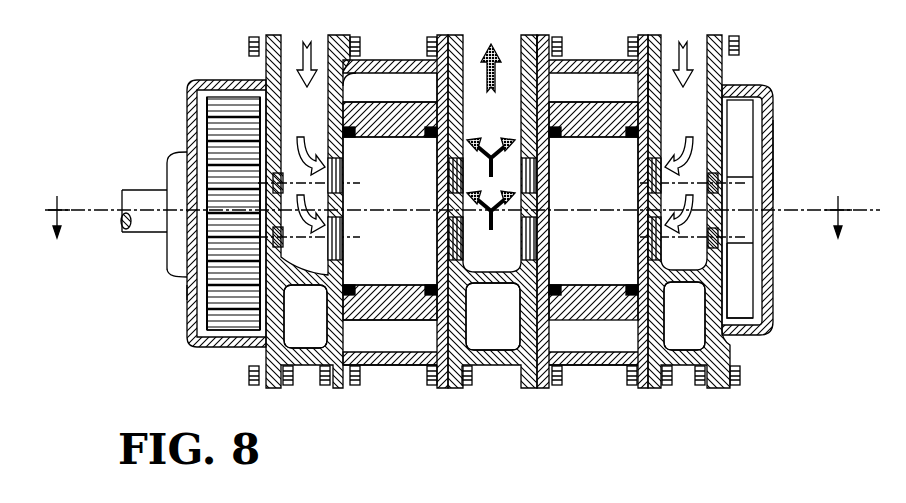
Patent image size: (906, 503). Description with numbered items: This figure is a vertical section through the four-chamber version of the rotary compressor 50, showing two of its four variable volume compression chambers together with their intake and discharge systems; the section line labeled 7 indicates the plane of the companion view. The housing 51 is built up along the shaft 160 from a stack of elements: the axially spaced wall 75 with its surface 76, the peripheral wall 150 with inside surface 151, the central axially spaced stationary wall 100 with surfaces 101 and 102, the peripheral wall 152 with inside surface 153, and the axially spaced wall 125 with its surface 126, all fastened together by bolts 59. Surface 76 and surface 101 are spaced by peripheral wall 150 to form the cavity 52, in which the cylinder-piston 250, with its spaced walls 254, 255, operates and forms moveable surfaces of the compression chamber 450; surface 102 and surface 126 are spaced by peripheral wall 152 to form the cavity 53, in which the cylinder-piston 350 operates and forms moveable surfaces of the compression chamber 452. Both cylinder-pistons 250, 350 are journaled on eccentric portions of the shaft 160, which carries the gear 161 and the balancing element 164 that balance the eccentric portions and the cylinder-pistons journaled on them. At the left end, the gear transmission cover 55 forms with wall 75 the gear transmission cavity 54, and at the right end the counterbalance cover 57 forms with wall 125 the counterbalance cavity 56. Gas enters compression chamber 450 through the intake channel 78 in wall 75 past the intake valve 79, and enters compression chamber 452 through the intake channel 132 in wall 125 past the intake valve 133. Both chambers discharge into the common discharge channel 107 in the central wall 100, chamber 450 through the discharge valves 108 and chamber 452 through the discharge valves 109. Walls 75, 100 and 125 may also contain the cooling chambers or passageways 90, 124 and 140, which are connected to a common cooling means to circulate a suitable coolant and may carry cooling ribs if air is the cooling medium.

The section line 7- 7 is at (448, 207).
The rotary compressor 50 is at (763, 86).
The housing 51 is at (193, 82).
The cavity 52 is at (369, 96).
The cavity 53 is at (571, 96).
The gear transmission cavity 54 is at (205, 305).
The gear transmission cover 55 is at (187, 290).
The counterbalance cavity 56 is at (758, 138).
The counterbalance cover 57 is at (768, 162).
The bolts 59 is at (250, 37).
The axially spaced wall 75 is at (275, 35).
The surface 76 is at (344, 78).
The intake channel 78 is at (298, 119).
The intake valve 79 is at (342, 177).
The cooling chamber or passageway 90 is at (284, 324).
The central axially spaced stationary wall 100 is at (529, 35).
The surface 101 is at (448, 89).
The surface 102 is at (546, 75).
The discharge channel 107 is at (480, 119).
The discharge valves 108 is at (450, 185).
The discharge valves 109 is at (538, 180).
The cooling chambers or passageways 124 is at (465, 315).
The axially spaced wall 125 is at (715, 34).
The surface 126 is at (648, 84).
The intake channel 132 is at (672, 119).
The intake valve 133 is at (650, 176).
The cooling chamber or passageway 140 is at (664, 307).
The peripheral wall 150 is at (407, 62).
The inside surface 151 is at (412, 352).
The peripheral wall 152 is at (611, 60).
The inside surface 153 is at (620, 352).
The shaft 160 is at (147, 200).
The gear 161 is at (210, 335).
The balancing element 164 is at (745, 297).
The cylinder-piston 250 is at (401, 322).
The spaced wall 254 is at (393, 122).
The spaced wall 255 is at (387, 300).
The cylinder-piston 350 is at (594, 137).
The compression chamber 450 is at (375, 221).
The compression chamber 452 is at (579, 221).